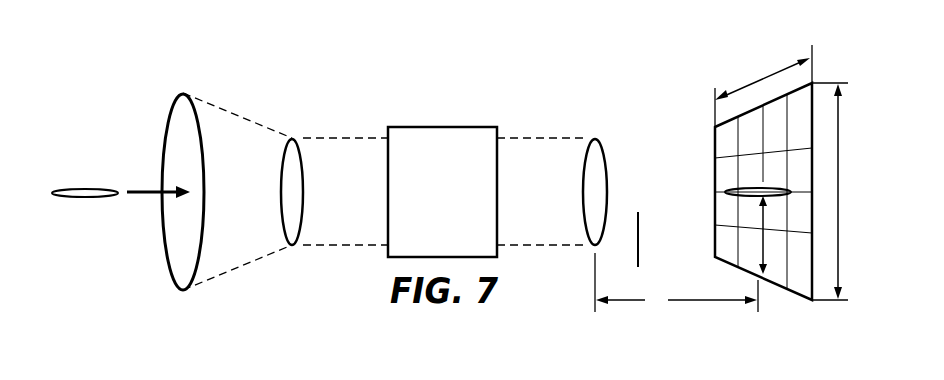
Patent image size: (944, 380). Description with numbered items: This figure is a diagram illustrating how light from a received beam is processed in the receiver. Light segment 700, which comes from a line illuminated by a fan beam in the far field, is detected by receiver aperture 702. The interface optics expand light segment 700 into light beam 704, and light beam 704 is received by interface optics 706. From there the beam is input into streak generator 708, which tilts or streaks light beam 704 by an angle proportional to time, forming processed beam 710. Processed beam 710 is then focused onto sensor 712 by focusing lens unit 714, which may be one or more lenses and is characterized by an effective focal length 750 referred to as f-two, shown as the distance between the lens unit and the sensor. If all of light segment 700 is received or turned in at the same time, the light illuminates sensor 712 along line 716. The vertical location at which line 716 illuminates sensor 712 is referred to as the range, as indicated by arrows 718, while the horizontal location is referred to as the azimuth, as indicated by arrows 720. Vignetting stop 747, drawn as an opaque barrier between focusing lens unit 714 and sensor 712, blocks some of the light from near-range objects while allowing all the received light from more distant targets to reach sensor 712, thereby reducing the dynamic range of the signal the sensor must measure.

The light segment 700 is at (80, 190).
The receiver aperture 702 is at (177, 118).
The light beam 704 is at (243, 117).
The interface optics 706 is at (286, 183).
The streak generator 708 is at (464, 207).
The processed beam 710 is at (550, 137).
The sensor 712 is at (713, 138).
The focusing lens unit 714 is at (605, 190).
The line 716 is at (778, 195).
The arrows indicating range 718 is at (843, 165).
The arrows indicating azimuth 720 is at (760, 78).
The vignetting stop 747 is at (640, 262).
The effective focal length 750 is at (700, 302).